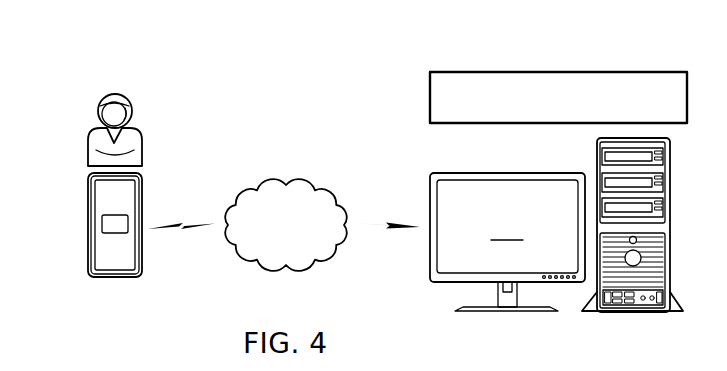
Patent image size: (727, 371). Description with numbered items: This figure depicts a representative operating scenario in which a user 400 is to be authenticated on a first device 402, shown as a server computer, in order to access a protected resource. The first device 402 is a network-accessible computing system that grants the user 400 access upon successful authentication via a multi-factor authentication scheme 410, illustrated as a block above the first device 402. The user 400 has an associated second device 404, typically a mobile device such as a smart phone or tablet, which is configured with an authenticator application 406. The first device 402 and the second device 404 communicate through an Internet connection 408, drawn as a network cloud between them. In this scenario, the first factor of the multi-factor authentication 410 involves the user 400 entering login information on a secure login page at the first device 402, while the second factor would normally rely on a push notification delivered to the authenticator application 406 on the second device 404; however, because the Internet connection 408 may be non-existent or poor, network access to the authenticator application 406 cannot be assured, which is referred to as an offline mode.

The user 400 is at (88, 149).
The first device 402 is at (556, 234).
The second device 404 is at (88, 232).
The authenticator application 406 is at (115, 215).
The Internet connection 408 is at (259, 186).
The multi-factor authentication scheme 410 is at (557, 72).